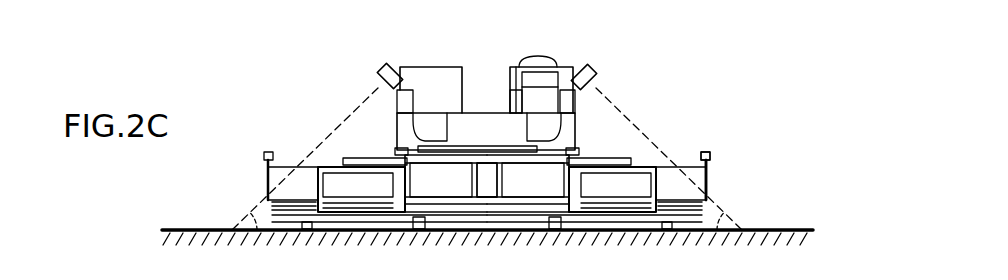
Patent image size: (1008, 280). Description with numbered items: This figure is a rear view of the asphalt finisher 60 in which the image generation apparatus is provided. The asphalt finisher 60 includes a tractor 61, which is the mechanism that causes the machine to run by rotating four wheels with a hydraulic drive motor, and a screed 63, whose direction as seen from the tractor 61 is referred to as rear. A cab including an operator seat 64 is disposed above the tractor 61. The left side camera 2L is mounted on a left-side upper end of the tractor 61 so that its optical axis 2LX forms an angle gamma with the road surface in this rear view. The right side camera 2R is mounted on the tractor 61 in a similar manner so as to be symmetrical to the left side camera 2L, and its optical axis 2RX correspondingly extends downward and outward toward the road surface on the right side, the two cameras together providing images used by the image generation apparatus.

The asphalt finisher 60 is at (724, 46).
The tractor 61 is at (488, 70).
The screed 63 is at (724, 152).
The operator seat 64 is at (537, 57).
The left side camera 2L is at (378, 70).
The right side camera 2R is at (597, 68).
The optical axis of the left side camera 2LX is at (348, 114).
The optical axis of the right side camera 2RX is at (630, 112).